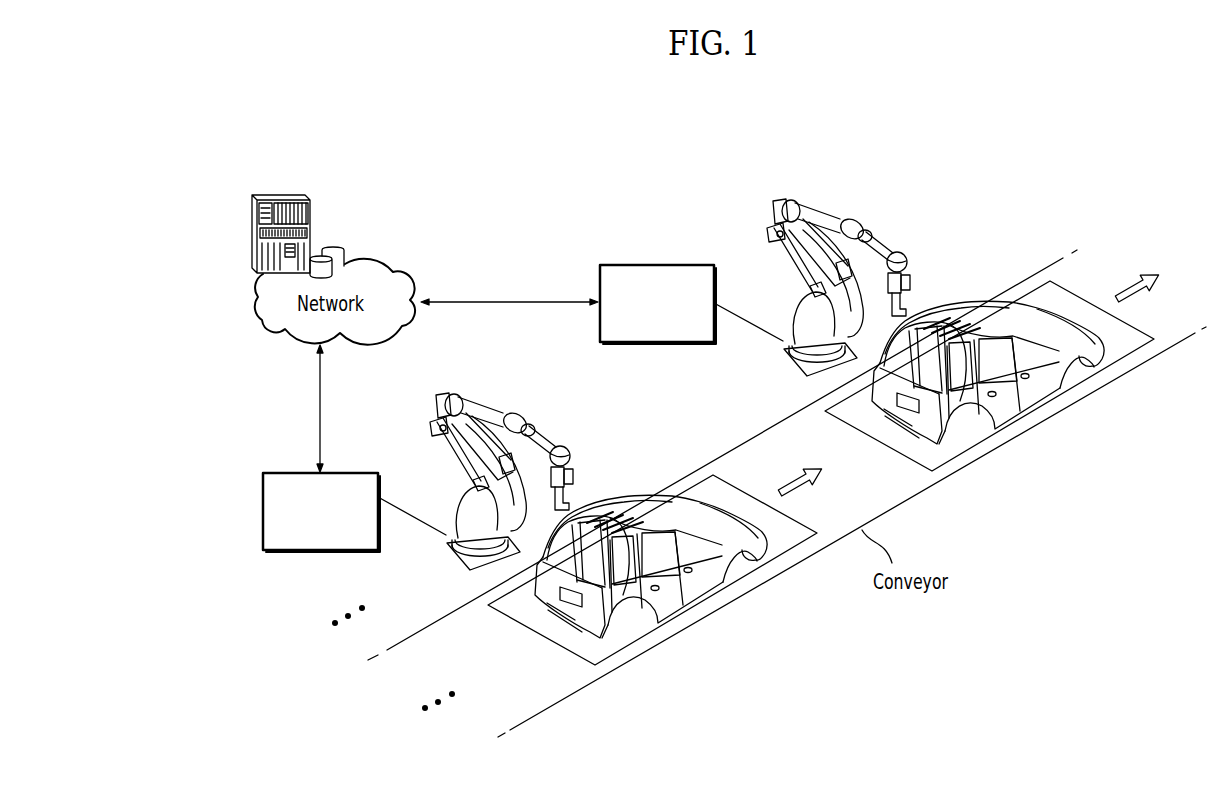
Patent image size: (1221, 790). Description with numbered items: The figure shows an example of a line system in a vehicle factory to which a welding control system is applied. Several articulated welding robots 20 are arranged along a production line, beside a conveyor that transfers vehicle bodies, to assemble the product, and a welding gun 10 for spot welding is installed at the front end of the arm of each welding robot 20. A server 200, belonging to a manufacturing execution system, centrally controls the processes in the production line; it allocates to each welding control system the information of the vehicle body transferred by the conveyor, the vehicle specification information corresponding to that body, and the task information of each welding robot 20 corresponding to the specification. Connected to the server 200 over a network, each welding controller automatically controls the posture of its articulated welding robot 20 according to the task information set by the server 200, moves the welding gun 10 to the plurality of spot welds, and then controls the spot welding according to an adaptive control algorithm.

The server 200 is at (282, 195).
The articulated welding robot 20 is at (458, 510).
The welding gun 10 is at (575, 474).